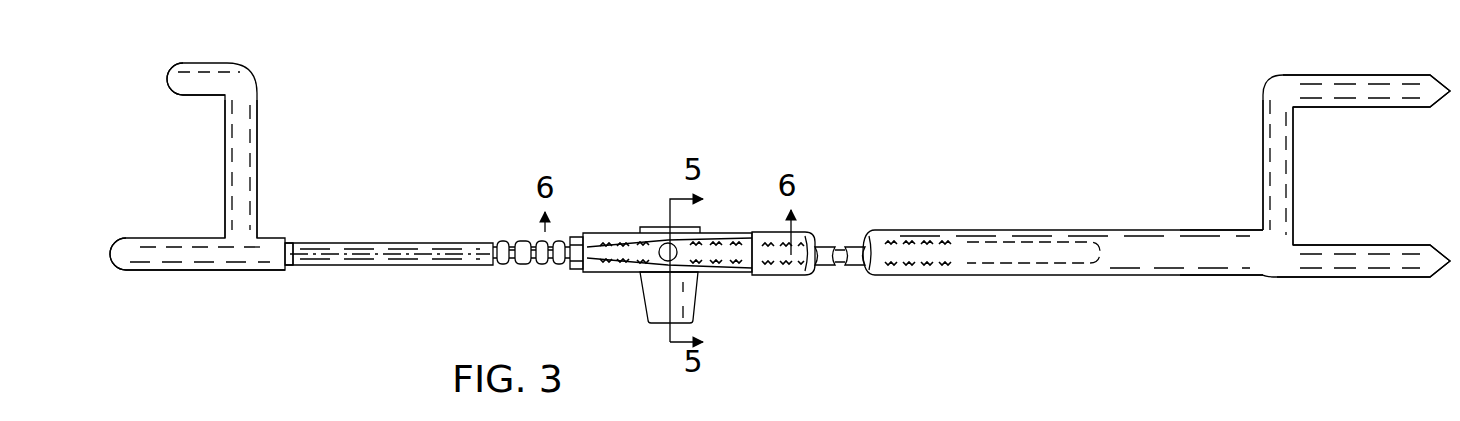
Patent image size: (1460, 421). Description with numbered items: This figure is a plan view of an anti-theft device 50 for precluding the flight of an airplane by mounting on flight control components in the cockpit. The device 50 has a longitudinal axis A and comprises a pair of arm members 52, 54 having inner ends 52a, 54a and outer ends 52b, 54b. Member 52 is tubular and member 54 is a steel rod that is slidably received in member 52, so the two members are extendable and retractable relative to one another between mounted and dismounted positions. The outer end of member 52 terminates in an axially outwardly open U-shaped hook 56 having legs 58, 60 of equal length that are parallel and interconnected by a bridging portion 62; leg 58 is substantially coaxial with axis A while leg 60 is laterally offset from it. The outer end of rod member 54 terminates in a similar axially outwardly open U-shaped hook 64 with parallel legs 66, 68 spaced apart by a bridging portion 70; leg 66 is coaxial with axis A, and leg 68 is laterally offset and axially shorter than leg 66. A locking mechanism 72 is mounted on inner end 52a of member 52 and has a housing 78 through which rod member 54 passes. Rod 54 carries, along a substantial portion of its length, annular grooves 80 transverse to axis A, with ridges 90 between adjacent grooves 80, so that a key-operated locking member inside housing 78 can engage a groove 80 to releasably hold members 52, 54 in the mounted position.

The anti-theft device 50 is at (806, 125).
The arm member 52 is at (1043, 226).
The inner end of member 52 52a is at (775, 278).
The outer end of member 52 52b is at (1240, 268).
The rod member 54 is at (362, 240).
The inner end of member 54 54a is at (1073, 263).
The outer end of member 54 54b is at (297, 260).
The U-shaped hook 56 is at (1262, 87).
The leg 58 is at (1366, 268).
The leg 60 is at (1373, 85).
The bridging portion 62 is at (1282, 177).
The U-shaped hook 64 is at (260, 102).
The leg 66 is at (183, 258).
The leg 68 is at (197, 87).
The bridging portion 70 is at (243, 157).
The locking mechanism 72 is at (637, 283).
The housing 78 is at (602, 237).
The annular grooves 80 is at (533, 262).
The ridges 90 is at (525, 242).
The axis A is at (405, 252).